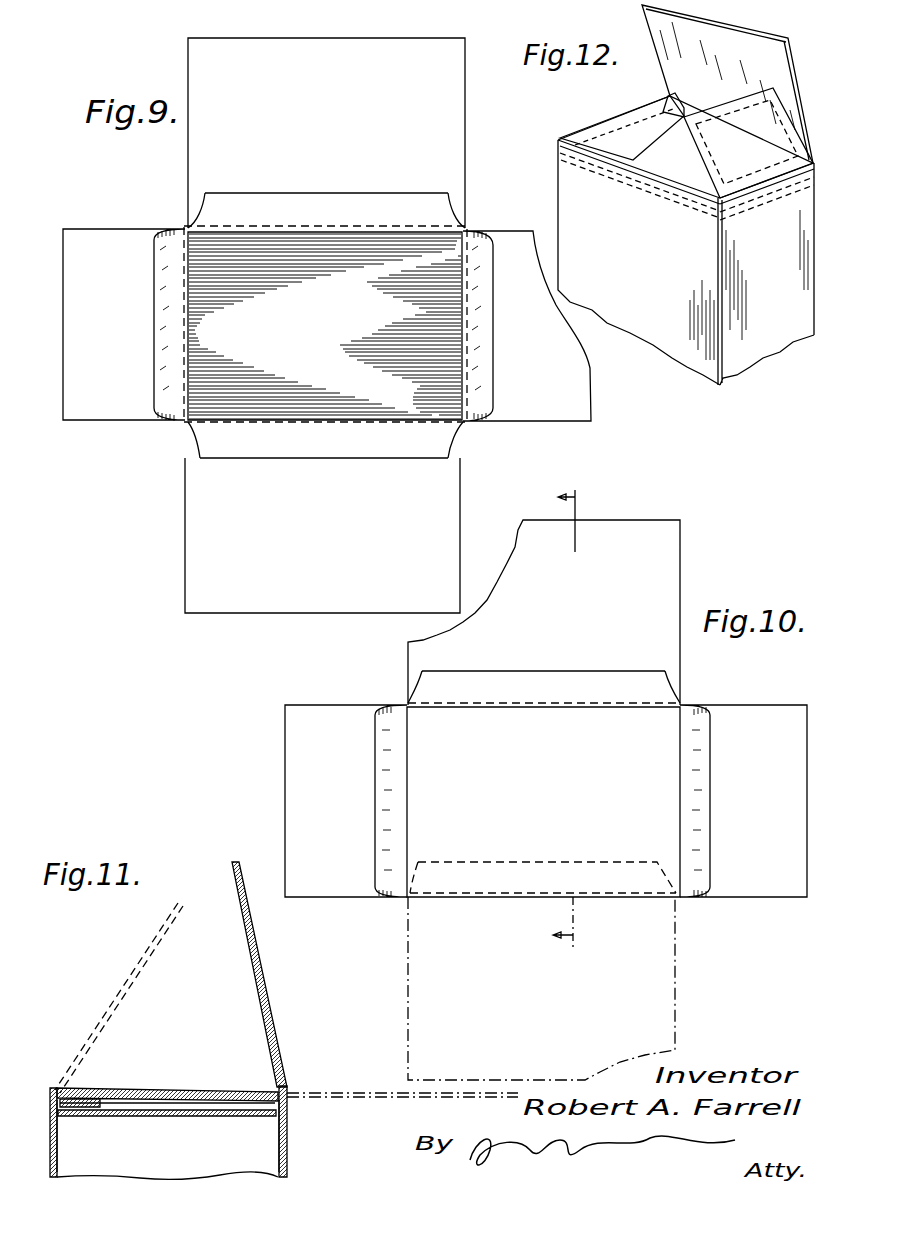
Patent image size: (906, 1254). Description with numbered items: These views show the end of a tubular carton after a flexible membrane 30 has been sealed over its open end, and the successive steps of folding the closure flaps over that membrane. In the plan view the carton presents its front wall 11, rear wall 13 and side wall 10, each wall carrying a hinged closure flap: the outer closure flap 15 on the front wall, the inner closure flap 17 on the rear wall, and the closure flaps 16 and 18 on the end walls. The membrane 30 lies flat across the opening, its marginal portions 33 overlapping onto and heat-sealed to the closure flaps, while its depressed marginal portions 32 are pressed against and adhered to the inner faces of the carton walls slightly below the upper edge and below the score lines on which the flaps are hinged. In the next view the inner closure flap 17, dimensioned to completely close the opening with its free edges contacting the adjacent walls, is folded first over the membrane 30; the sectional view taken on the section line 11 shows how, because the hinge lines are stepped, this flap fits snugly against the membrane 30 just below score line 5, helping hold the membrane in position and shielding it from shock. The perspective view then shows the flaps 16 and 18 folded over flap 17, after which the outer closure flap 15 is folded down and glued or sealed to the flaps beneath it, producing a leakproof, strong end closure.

In FIG. 11, the score line 5 is at (290, 1088).
In FIG. 12, the side wall 10 is at (756, 304).
In FIG. 10, the front wall 11 is at (580, 955).
In FIG. 11, the front wall 11 is at (288, 1148).
In FIG. 12, the rear wall 13 is at (616, 304).
In FIG. 11, the rear wall 13 is at (50, 1130).
In FIG. 9, the closure flap 15 is at (306, 132).
In FIG. 12, the closure flap 15 is at (723, 66).
In FIG. 10, the closure flap 15 is at (556, 597).
In FIG. 11, the closure flap 15 is at (268, 957).
In FIG. 9, the closure flap 16 is at (93, 329).
In FIG. 12, the closure flap 16 is at (632, 138).
In FIG. 10, the closure flap 16 is at (308, 812).
In FIG. 9, the closure flap 17 is at (323, 557).
In FIG. 12, the closure flap 17 is at (687, 168).
In FIG. 10, the closure flap 17 is at (536, 814).
In FIG. 11, the closure flap 17 is at (112, 1002).
In FIG. 9, the closure flap 18 is at (523, 392).
In FIG. 12, the closure flap 18 is at (770, 112).
In FIG. 10, the closure flap 18 is at (738, 812).
In FIG. 9, the flexible membrane 30 is at (313, 342).
In FIG. 12, the flexible membrane 30 is at (617, 170).
In FIG. 11, the flexible membrane 30 is at (160, 1118).
In FIG. 11, the marginal portions 32 is at (280, 1110).
In FIG. 9, the marginal portions 33 is at (320, 208).
In FIG. 12, the marginal portions 33 is at (676, 98).
In FIG. 10, the marginal portions 33 is at (568, 682).
In FIG. 11, the marginal portions 33 is at (90, 1093).